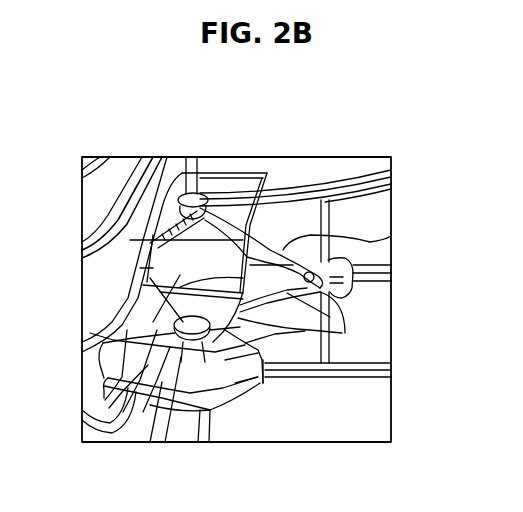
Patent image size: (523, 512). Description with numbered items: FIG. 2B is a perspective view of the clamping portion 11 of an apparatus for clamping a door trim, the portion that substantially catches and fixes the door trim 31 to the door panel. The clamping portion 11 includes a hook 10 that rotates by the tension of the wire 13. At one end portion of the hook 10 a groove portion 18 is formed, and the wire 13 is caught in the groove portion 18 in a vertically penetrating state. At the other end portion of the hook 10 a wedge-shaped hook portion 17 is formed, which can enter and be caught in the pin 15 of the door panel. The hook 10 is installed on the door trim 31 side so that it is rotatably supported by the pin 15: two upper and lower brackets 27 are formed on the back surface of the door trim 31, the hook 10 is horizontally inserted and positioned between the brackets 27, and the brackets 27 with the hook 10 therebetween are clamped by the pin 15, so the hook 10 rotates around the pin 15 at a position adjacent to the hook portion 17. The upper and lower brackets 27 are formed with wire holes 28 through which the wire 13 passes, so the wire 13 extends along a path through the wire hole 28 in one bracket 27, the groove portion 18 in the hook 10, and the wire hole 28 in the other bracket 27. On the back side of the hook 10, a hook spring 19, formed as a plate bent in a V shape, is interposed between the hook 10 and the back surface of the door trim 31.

The hook 10 is at (340, 317).
The clamping portion 11 is at (402, 314).
The wire 13 is at (390, 235).
The pin 15 is at (180, 380).
The hook portion 17 is at (268, 380).
The groove portion 18 is at (353, 268).
The hook spring 19 is at (130, 312).
The bracket 27 is at (258, 158).
The wire hole 28 is at (228, 157).
The door trim 31 is at (315, 158).